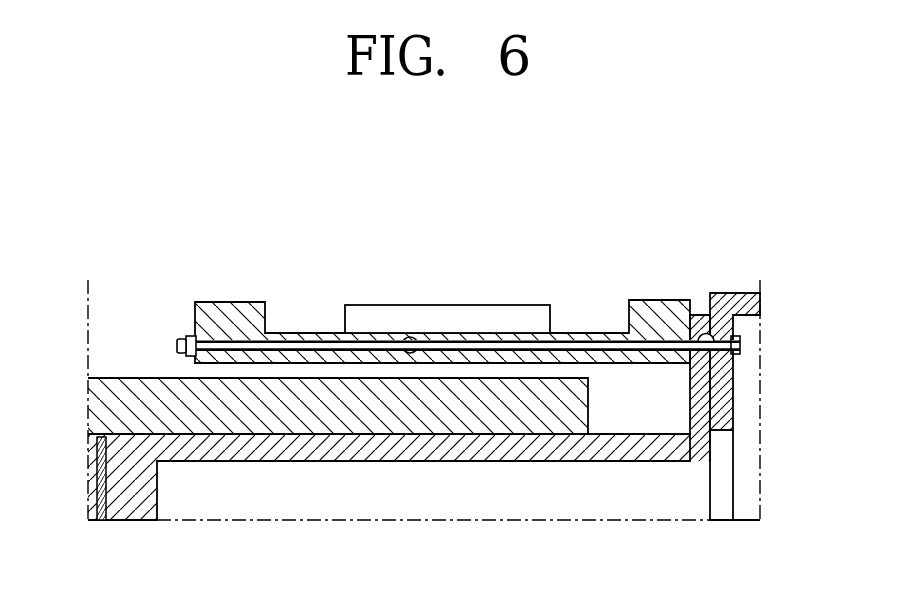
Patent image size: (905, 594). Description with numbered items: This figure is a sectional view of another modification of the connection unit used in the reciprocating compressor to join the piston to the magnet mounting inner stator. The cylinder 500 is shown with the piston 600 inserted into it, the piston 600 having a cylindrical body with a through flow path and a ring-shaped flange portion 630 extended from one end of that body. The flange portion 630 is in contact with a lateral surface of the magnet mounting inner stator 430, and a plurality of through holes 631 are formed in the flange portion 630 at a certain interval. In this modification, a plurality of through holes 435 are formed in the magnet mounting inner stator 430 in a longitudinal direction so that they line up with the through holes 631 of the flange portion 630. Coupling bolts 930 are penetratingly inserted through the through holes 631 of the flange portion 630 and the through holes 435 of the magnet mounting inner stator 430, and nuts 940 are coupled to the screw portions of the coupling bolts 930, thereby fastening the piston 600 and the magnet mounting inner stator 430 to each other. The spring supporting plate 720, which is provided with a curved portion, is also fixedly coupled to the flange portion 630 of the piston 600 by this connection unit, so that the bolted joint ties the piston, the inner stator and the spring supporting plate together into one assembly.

The magnet mounting inner stator 430 is at (307, 329).
The through holes 435 is at (417, 337).
The cylinder 500 is at (152, 376).
The piston 600 is at (132, 427).
The flange portion 630 is at (697, 380).
The through holes 631 is at (704, 334).
The spring supporting plate 720 is at (753, 291).
The coupling bolts 930 is at (741, 344).
The nuts 940 is at (186, 336).